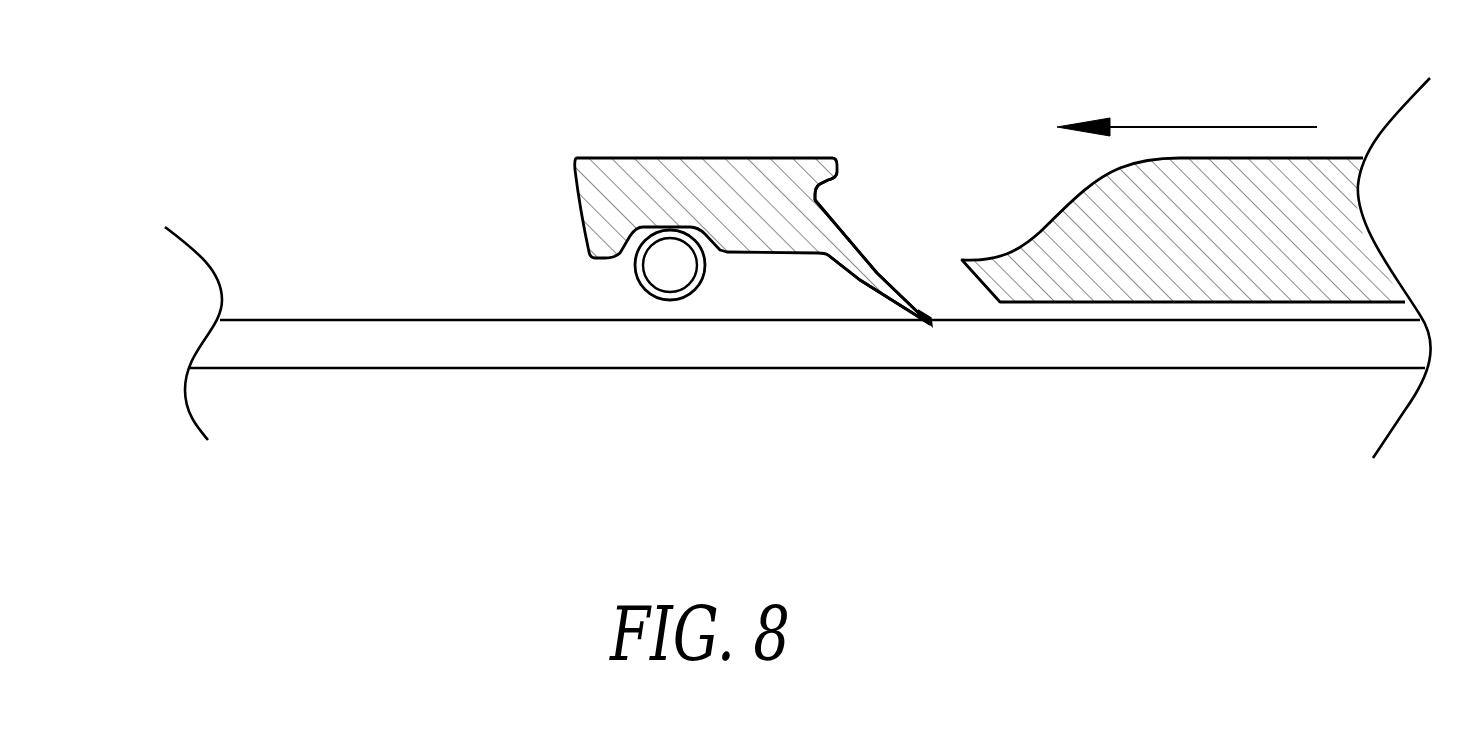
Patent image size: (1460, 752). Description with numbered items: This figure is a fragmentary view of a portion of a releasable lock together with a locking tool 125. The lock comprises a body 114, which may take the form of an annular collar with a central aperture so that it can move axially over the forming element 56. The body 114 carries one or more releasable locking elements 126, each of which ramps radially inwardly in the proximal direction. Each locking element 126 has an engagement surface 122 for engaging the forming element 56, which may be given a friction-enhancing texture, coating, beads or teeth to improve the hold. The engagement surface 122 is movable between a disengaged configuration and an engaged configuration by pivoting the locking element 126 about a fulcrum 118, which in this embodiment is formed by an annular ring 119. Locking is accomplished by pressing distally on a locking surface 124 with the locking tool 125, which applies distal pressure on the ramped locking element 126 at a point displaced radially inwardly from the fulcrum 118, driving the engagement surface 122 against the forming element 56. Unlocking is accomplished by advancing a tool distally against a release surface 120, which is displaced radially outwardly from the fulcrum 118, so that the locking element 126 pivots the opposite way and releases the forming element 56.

The forming element 56 is at (1265, 343).
The body 114 is at (670, 172).
The fulcrum 118 is at (673, 273).
The annular ring 119 is at (633, 266).
The release surface 120 is at (830, 178).
The engagement surface 122 is at (930, 325).
The locking surface 124 is at (907, 288).
The locking tool 125 is at (1290, 242).
The locking element 126 is at (828, 227).